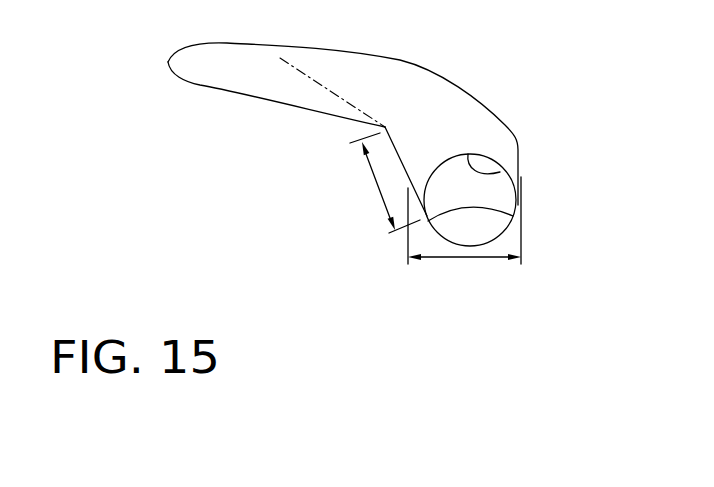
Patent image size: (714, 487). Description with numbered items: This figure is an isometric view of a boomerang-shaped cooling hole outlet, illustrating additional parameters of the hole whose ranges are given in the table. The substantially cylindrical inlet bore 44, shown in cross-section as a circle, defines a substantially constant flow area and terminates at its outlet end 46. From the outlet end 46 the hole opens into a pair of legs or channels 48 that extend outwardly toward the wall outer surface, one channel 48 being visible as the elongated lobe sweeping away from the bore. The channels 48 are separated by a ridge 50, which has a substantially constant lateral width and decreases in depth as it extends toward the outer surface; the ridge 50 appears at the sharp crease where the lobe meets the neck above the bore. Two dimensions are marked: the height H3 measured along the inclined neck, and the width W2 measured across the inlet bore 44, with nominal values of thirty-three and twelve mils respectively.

The channel 48 is at (268, 70).
The ridge 50 is at (358, 129).
The outlet end 46 is at (490, 175).
The inlet bore 44 is at (478, 224).
The height H3 is at (377, 188).
The width W2 is at (463, 260).